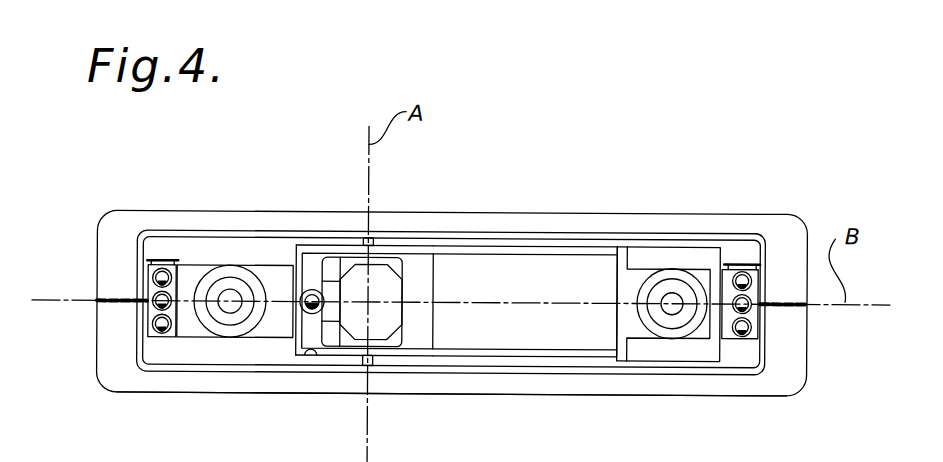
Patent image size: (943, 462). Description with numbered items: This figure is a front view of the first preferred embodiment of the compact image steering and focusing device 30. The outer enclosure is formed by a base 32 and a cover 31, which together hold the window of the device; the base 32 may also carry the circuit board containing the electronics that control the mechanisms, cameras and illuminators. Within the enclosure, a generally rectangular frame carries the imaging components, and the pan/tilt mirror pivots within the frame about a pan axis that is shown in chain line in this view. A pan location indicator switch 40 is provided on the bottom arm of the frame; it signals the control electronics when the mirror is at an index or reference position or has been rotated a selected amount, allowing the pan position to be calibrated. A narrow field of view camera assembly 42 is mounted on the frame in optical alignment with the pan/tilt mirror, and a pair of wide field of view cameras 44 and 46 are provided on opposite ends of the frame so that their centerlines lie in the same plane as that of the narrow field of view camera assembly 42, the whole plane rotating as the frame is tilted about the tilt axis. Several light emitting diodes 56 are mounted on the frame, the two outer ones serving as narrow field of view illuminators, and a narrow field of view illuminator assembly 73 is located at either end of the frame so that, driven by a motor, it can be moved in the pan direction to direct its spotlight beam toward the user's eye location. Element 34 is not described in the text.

The compact image steering and focusing device 30 is at (458, 200).
The cover 31 is at (683, 213).
The base 32 is at (525, 394).
The inner frame 34 is at (213, 248).
The pan location indicator switch 40 is at (318, 350).
The narrow field of view camera assembly 42 is at (500, 330).
The wide field of view camera 44 is at (225, 325).
The wide field of view camera 46 is at (670, 330).
The light emitting diodes 56 is at (309, 290).
The NFOV illuminator assembly 73 is at (167, 257).